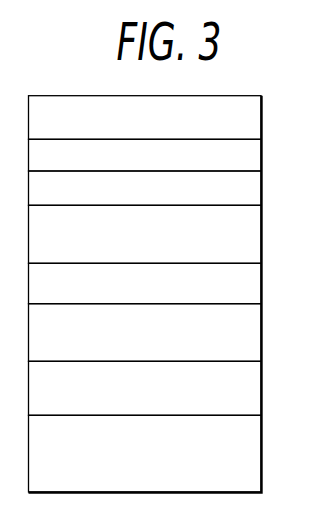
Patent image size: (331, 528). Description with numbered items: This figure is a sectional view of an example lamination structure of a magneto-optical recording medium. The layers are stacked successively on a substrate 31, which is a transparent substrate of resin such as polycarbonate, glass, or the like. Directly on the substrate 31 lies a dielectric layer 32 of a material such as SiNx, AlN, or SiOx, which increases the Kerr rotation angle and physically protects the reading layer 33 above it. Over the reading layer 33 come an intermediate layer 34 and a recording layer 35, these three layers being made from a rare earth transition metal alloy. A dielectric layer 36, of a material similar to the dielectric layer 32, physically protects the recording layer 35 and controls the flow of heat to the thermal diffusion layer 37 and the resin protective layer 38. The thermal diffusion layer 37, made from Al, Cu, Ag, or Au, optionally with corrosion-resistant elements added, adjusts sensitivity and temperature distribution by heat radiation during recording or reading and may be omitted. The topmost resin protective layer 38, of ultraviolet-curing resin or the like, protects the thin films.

The substrate 31 is at (165, 453).
The dielectric layer 32 is at (165, 388).
The reading layer 33 is at (165, 333).
The intermediate layer 34 is at (165, 283).
The recording layer 35 is at (165, 234).
The dielectric layer 36 is at (165, 188).
The thermal diffusion layer 37 is at (165, 155).
The resin protective layer 38 is at (165, 118).